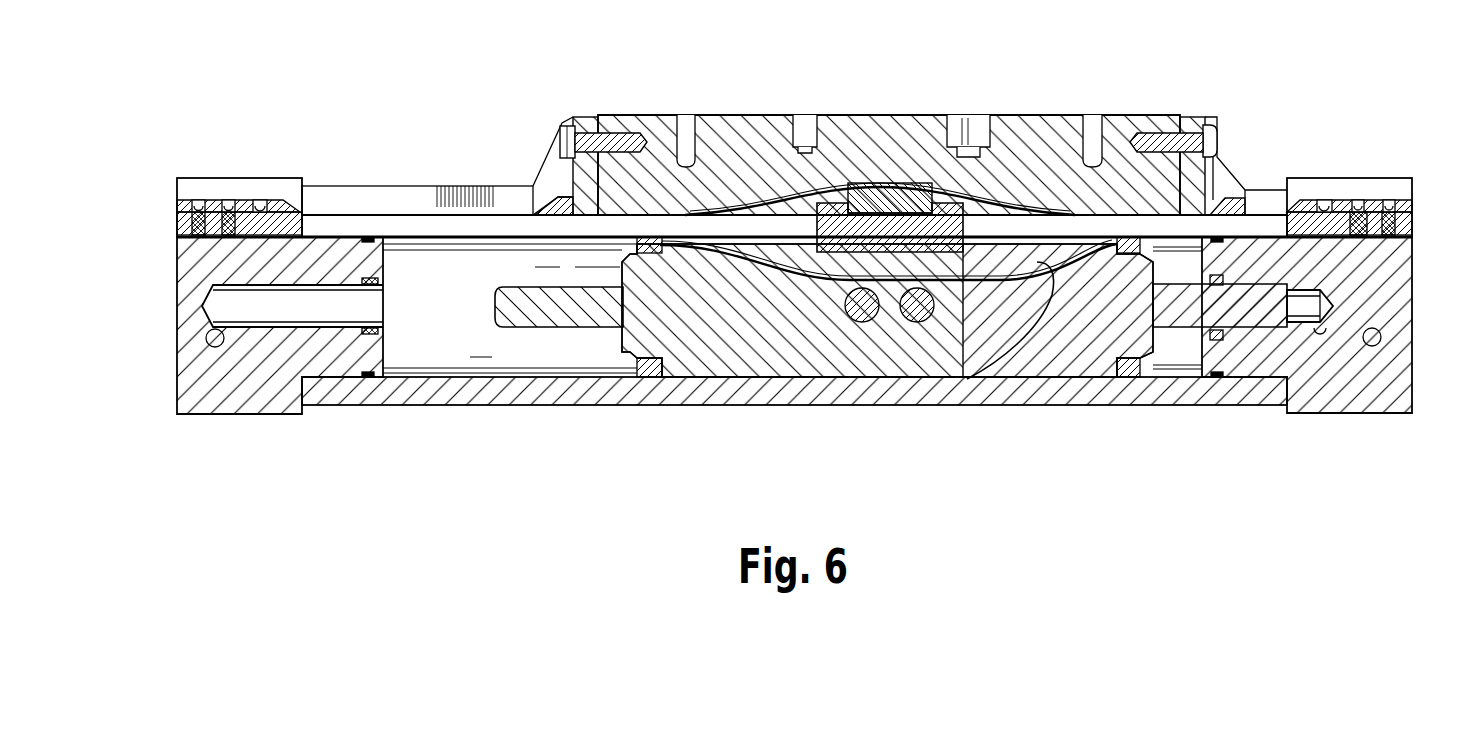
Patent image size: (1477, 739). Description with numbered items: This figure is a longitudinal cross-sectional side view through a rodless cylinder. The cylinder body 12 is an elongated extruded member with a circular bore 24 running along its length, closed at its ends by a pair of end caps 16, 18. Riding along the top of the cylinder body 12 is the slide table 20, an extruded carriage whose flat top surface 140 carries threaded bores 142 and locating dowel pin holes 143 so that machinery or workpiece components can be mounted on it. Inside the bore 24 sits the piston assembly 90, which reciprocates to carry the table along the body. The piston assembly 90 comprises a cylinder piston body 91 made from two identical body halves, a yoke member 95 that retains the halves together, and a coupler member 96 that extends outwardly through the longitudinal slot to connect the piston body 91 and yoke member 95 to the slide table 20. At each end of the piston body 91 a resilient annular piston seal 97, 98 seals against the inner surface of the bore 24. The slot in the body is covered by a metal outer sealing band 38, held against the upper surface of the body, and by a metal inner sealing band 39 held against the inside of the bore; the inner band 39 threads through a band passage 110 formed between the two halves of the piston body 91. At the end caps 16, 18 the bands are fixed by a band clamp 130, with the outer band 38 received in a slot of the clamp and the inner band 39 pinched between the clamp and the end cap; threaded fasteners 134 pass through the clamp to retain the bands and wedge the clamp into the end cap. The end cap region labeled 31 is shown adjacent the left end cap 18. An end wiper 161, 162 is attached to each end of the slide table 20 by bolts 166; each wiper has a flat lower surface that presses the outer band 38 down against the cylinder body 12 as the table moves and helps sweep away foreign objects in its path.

The cylinder body 12 is at (1060, 405).
The end cap 16 is at (1335, 400).
The end cap 18 is at (255, 395).
The slide table 20 is at (1040, 115).
The circular bore 24 is at (415, 345).
The left seal block 31 is at (183, 226).
The outer sealing band 38 is at (360, 215).
The inner sealing band 39 is at (425, 237).
The piston assembly 90 is at (605, 338).
The cylinder piston body 91 is at (700, 362).
The yoke member 95 is at (832, 205).
The coupler member 96 is at (893, 205).
The piston seal 97 is at (1125, 377).
The piston seal 98 is at (660, 377).
The band passage 110 is at (972, 382).
The band clamp 130 is at (1412, 212).
The threaded fasteners 134 is at (259, 200).
The flat top surface 140 is at (655, 115).
The threaded bores 142 is at (688, 128).
The locating dowel pin holes 143 is at (805, 128).
The end wiper 161 is at (1190, 128).
The end wiper 162 is at (586, 115).
The bolts 166 is at (560, 130).